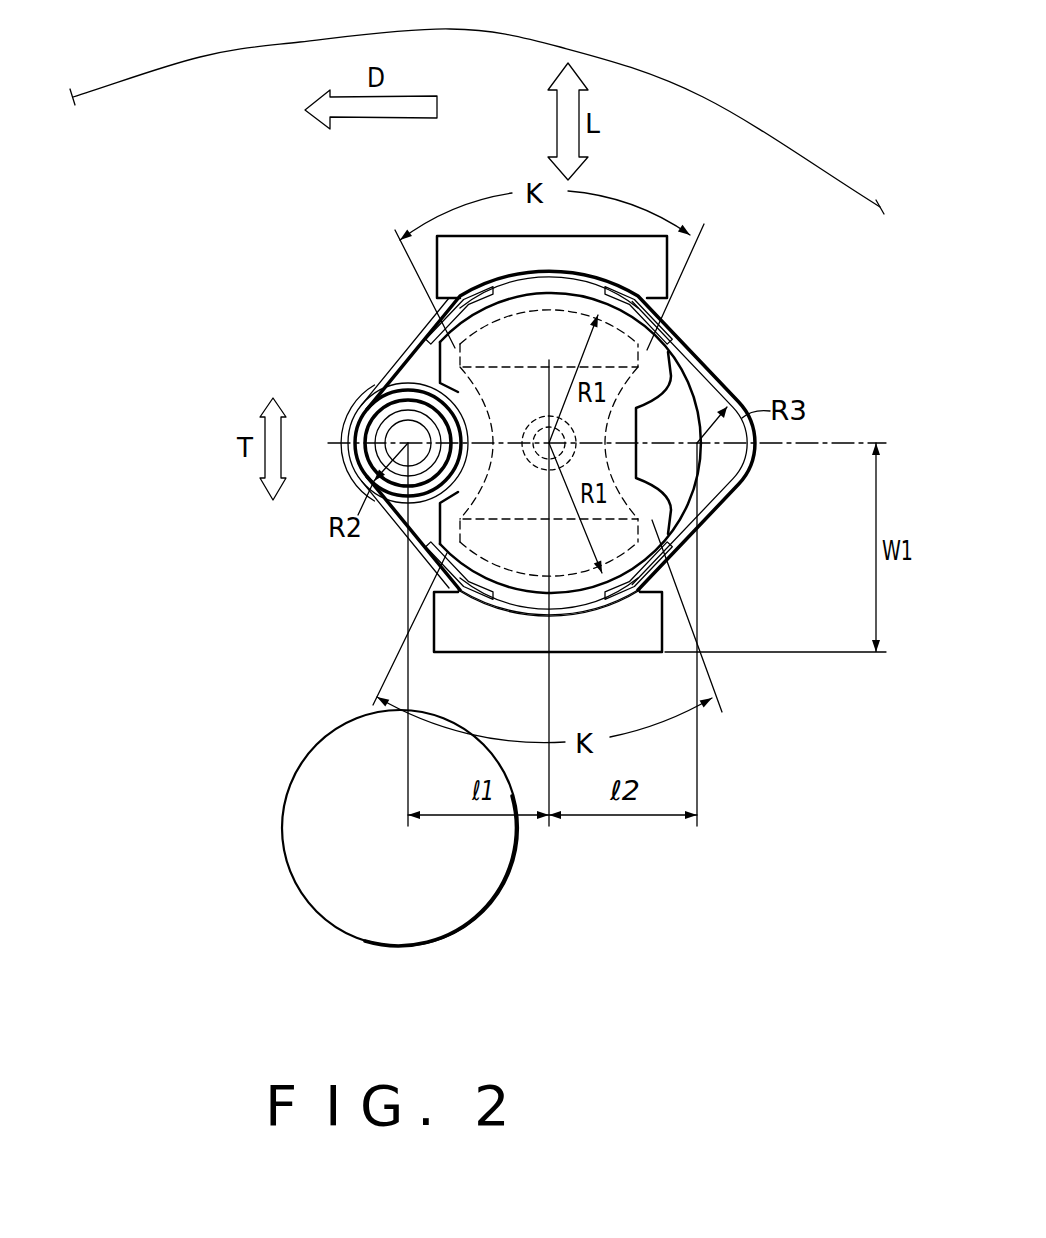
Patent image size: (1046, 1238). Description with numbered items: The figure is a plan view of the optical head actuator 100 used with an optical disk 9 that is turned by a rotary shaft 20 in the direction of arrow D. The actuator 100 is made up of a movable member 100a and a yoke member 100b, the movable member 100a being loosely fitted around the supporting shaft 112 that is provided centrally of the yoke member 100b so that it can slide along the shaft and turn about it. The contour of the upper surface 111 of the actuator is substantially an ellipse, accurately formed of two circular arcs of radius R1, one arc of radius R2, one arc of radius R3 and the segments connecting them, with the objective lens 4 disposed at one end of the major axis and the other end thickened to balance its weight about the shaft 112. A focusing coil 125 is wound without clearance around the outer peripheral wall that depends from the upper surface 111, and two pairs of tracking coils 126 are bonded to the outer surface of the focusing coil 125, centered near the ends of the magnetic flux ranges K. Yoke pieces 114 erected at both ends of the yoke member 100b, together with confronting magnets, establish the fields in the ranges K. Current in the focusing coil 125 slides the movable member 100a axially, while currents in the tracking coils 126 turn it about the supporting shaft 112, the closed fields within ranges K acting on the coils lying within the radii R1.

The objective lens 4 is at (388, 430).
The optical disk 9 is at (700, 112).
The rotary shaft 20 is at (486, 889).
The optical head actuator 100 is at (358, 366).
The movable member 100a is at (730, 362).
The yoke member 100b is at (630, 233).
The upper surface 111 is at (714, 483).
The supporting shaft 112 is at (542, 458).
The yoke pieces 114 is at (623, 638).
The focusing coil 125 is at (720, 480).
The tracking coils 126 is at (425, 345).